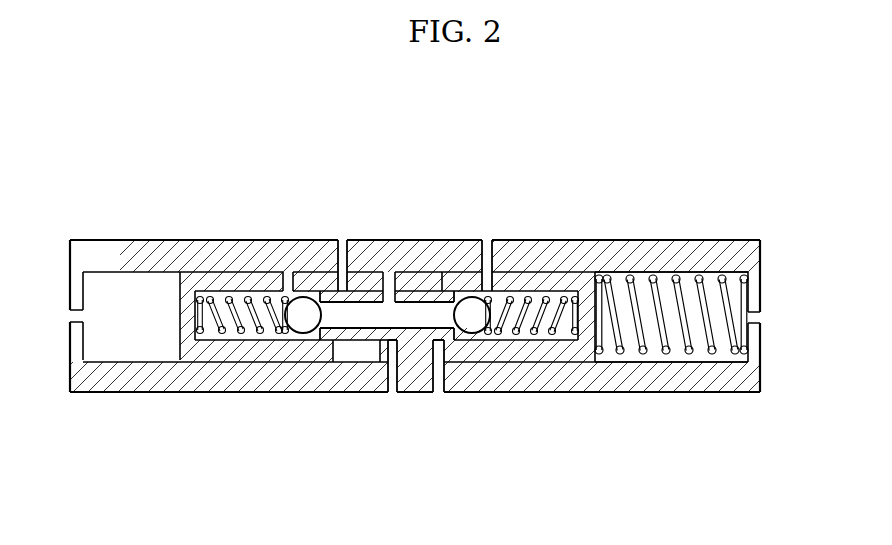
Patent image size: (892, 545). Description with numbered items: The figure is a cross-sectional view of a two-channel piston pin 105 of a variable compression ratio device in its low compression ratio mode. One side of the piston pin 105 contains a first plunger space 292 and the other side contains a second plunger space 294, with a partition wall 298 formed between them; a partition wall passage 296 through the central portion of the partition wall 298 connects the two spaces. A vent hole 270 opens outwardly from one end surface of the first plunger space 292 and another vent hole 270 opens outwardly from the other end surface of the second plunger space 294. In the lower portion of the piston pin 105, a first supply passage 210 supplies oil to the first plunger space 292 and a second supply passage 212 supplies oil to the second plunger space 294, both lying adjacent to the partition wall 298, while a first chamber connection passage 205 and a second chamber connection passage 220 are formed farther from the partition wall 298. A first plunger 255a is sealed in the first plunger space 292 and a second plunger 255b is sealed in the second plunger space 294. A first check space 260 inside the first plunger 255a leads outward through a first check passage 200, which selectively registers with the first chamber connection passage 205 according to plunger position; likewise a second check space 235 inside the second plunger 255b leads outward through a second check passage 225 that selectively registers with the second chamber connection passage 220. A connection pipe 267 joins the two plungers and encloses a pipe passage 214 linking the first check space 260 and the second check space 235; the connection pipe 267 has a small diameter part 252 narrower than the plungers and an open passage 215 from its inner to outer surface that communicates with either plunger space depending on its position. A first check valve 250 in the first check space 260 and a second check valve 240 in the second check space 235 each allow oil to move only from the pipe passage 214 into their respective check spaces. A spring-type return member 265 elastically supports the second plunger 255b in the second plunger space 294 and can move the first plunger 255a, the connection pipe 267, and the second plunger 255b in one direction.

The piston pin 105 is at (122, 254).
The vent hole 270 is at (73, 317).
The first plunger space 292 is at (116, 352).
The first plunger 255a is at (208, 352).
The first check space 260 is at (217, 300).
The first check valve 250 is at (305, 322).
The first check passage 200 is at (287, 292).
The pipe passage 214 is at (340, 312).
The first chamber connection passage 205 is at (340, 250).
The small diameter part 252 is at (355, 285).
The partition wall passage 296 is at (410, 275).
The second check passage 225 is at (457, 275).
The second chamber connection passage 220 is at (488, 252).
The second check space 235 is at (535, 287).
The second plunger 255b is at (567, 280).
The second check valve 240 is at (474, 333).
The connection pipe 267 is at (360, 333).
The open passage 215 is at (383, 337).
The first supply passage 210 is at (392, 393).
The second supply passage 212 is at (438, 380).
The partition wall 298 is at (420, 353).
The second plunger space 294 is at (647, 353).
The return member 265 is at (703, 365).